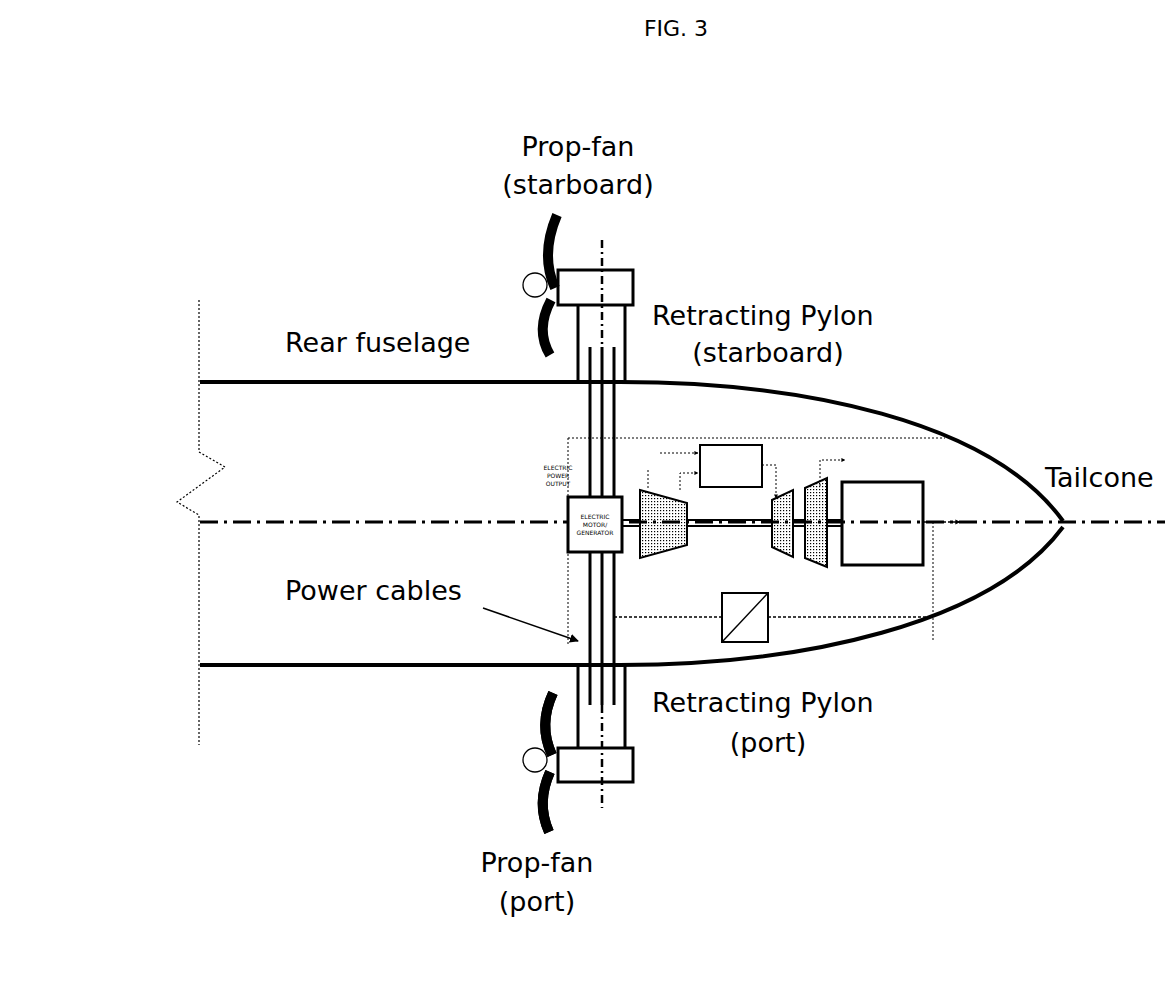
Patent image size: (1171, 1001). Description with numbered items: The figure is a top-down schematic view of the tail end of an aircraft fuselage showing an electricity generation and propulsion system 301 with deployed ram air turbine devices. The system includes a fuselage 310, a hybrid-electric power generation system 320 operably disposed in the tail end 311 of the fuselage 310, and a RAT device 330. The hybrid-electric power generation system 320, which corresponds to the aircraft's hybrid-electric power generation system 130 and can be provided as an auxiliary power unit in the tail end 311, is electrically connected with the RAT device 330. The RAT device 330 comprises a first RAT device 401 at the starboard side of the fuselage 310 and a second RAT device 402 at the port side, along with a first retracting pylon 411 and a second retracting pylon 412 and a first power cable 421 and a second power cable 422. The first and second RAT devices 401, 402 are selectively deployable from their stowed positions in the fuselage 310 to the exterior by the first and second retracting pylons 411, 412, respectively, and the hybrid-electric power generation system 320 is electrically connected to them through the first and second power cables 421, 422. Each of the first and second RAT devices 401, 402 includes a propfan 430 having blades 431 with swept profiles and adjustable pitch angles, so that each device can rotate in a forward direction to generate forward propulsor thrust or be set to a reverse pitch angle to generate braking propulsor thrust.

The hybrid-electric power generation system 130 is at (693, 591).
The electricity generation and propulsion system 301 is at (925, 404).
The fuselage 310 is at (262, 398).
The tail end 311 is at (1008, 558).
The hybrid-electric power generation system 320 is at (868, 587).
The RAT device 330 is at (639, 266).
The first RAT device 401 is at (473, 531).
The second RAT device 402 is at (543, 767).
The first retracting pylon 411 is at (613, 337).
The second retracting pylon 412 is at (618, 725).
The first power cable 421 is at (590, 417).
The second power cable 422 is at (588, 612).
The propfan 430 is at (523, 285).
The blades 431 is at (547, 233).